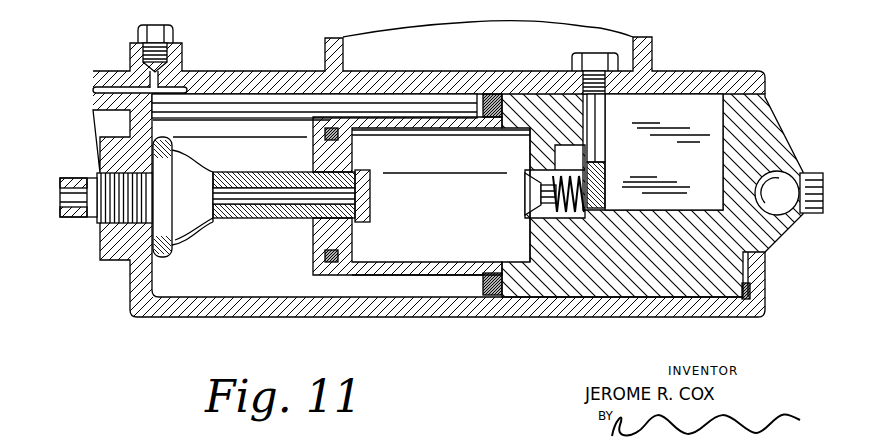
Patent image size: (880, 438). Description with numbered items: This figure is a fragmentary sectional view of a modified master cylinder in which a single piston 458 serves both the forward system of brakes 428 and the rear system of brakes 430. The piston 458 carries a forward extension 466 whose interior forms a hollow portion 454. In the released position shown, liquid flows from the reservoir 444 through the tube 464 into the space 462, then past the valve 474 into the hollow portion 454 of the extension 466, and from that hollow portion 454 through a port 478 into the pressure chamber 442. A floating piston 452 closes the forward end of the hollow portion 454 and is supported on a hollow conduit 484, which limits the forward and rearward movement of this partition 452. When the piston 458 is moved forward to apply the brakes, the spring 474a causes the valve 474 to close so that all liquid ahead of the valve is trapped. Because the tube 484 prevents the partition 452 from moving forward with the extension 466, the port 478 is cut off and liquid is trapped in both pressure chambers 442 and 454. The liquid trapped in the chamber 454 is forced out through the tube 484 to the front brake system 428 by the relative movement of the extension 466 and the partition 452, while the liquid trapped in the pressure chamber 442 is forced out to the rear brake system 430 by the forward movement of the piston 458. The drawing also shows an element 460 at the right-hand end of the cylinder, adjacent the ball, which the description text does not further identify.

The forward system of brakes 428 is at (70, 200).
The rear system of brakes 430 is at (93, 92).
The pressure chamber 442 is at (257, 107).
The reservoir 444 is at (545, 14).
The floating piston 452 is at (312, 257).
The hollow portion 454 is at (403, 250).
The piston 458 is at (627, 282).
The ball check valve plug 460 is at (810, 187).
The space 462 is at (690, 103).
The tube 464 is at (605, 149).
The forward extension 466 is at (445, 275).
The valve 474 is at (528, 198).
The spring 474a is at (555, 212).
The port 478 is at (355, 127).
The hollow conduit 484 is at (233, 222).